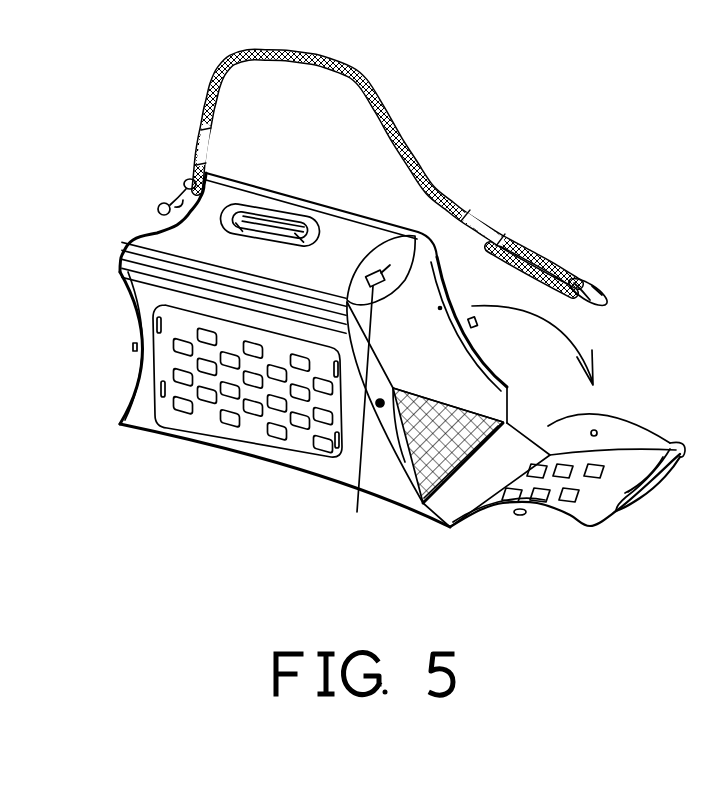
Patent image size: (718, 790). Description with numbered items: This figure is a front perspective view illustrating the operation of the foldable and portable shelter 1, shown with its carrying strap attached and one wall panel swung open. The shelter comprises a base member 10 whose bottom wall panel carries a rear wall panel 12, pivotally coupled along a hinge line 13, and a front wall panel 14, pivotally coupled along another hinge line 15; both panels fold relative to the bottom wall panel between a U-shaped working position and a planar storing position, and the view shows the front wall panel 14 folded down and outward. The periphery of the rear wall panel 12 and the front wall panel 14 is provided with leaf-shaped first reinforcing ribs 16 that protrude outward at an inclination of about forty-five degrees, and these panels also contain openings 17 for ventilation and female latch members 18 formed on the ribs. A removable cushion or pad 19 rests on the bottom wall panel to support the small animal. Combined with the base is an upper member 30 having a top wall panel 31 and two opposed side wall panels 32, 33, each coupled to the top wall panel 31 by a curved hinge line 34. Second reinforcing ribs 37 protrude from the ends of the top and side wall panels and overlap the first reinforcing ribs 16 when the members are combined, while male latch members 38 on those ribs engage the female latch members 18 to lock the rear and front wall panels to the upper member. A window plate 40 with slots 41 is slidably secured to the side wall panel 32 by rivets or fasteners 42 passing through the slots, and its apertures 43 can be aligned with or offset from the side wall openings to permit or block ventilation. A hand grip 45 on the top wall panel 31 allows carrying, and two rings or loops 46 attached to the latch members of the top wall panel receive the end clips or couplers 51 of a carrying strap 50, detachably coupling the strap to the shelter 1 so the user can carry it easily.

The foldable and portable shelter 1 is at (82, 127).
The base member 10 is at (445, 543).
The rear wall panel 12 is at (122, 392).
The hinge line 13 is at (120, 445).
The front wall panel 14 is at (597, 513).
The hinge line 15 is at (468, 532).
The first reinforcing ribs 16 is at (560, 458).
The openings 17 is at (560, 462).
The female latch members 18 is at (521, 516).
The cushion or pad 19 is at (470, 417).
The upper member 30 is at (298, 209).
The top wall panel 31 is at (223, 190).
The side wall panel 32 is at (398, 492).
The side wall panel 33 is at (423, 308).
The hinge line 34 is at (383, 228).
The second reinforcing ribs 37 is at (396, 263).
The male latch members 38 is at (378, 410).
The window plate 40 is at (252, 427).
The slots 41 is at (160, 385).
The rivets or fasteners 42 is at (158, 390).
The apertures 43 is at (322, 447).
The hand grip 45 is at (282, 217).
The rings or loops 46 is at (159, 204).
The carrying belt or strap 50 is at (407, 143).
The end clips or couplers 51 is at (600, 297).